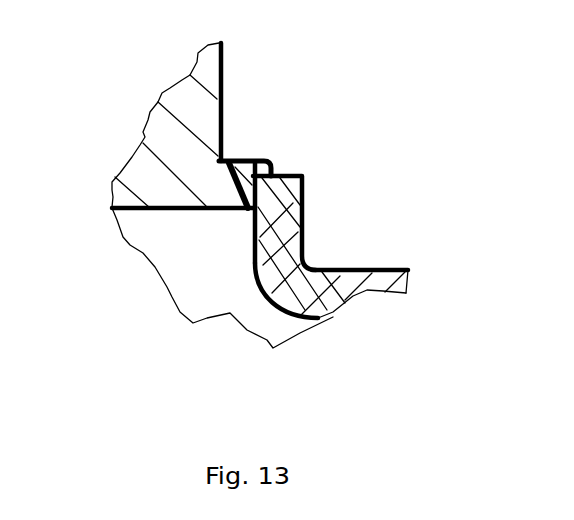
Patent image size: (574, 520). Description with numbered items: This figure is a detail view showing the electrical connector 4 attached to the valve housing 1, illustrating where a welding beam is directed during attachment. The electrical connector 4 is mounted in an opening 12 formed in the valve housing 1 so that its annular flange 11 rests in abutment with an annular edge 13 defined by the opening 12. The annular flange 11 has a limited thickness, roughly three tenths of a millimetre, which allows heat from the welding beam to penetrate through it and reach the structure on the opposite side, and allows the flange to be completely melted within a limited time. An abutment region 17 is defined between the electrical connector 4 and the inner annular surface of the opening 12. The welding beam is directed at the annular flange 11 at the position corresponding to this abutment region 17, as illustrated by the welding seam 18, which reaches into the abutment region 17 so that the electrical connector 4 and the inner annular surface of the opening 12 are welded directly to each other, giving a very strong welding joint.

The valve housing 1 is at (340, 279).
The electrical connector 4 is at (170, 135).
The annular flange 11 is at (243, 157).
The opening 12 is at (245, 232).
The annular edge 13 is at (290, 172).
The abutment region 17 is at (330, 311).
The welding seam 18 is at (260, 158).